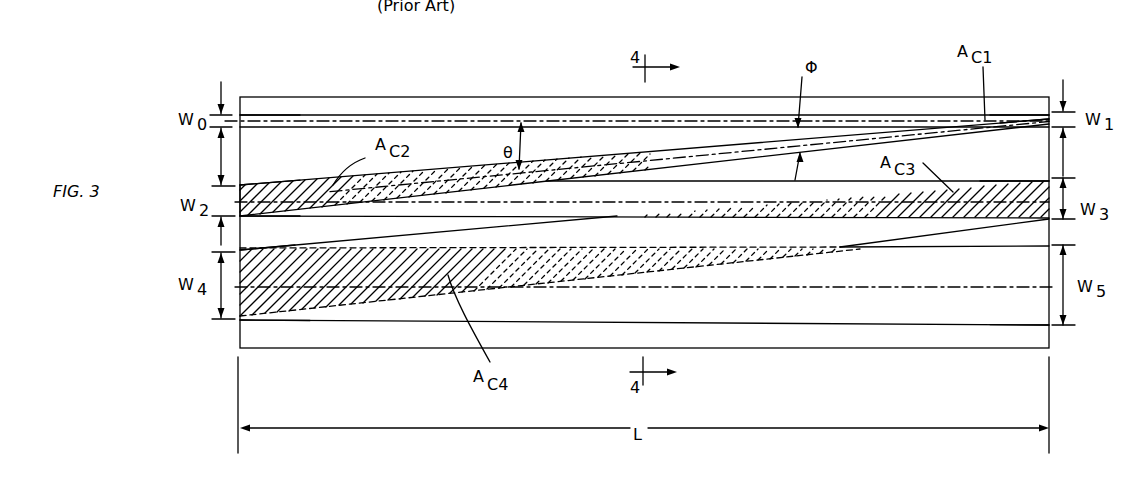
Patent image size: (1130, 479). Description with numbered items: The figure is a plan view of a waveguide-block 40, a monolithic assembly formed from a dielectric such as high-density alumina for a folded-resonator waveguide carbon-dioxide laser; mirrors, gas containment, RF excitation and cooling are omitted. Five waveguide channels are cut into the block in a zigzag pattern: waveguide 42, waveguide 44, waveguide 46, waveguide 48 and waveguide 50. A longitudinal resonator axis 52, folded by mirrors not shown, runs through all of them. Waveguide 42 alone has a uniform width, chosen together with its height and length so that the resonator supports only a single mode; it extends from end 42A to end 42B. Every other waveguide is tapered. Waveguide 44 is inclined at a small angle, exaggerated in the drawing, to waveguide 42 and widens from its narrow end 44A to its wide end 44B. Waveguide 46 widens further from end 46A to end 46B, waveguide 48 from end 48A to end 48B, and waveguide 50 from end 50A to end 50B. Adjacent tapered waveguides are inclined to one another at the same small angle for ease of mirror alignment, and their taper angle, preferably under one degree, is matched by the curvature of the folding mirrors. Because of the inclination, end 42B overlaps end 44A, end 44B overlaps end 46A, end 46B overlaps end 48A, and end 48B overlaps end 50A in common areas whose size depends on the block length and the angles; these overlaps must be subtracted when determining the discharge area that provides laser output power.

The waveguide-block 40 is at (287, 37).
The waveguide 42 is at (393, 116).
The end of waveguide 42 42A is at (287, 115).
The end of waveguide 42 42B is at (1035, 116).
The waveguide 44 is at (430, 168).
The end of waveguide 44 44A is at (1010, 130).
The end of waveguide 44 44B is at (290, 183).
The waveguide 46 is at (963, 178).
The end of waveguide 46 46A is at (268, 215).
The end of waveguide 46 46B is at (984, 180).
The waveguide 48 is at (322, 242).
The end of waveguide 48 48A is at (1003, 222).
The end of waveguide 48 48B is at (290, 248).
The waveguide 50 is at (358, 324).
The end of waveguide 50 50A is at (307, 322).
The end of waveguide 50 50B is at (1018, 327).
The longitudinal resonator axis 52 is at (582, 112).